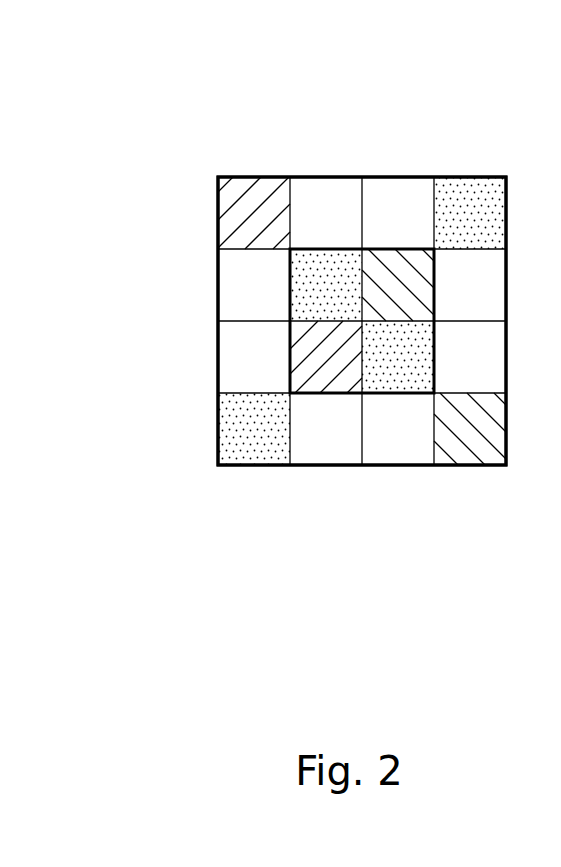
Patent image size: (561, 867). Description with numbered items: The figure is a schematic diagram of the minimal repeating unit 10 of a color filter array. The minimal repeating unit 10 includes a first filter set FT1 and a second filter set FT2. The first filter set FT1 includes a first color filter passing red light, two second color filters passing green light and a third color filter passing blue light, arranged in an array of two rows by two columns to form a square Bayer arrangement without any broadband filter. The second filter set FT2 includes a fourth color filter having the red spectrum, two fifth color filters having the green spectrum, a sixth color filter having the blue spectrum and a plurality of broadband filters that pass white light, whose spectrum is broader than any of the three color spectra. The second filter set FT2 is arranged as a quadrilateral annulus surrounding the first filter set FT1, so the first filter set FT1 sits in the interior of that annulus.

The minimal repeating unit 10 is at (69, 73).
The first filter set FT1 is at (380, 377).
The second filter set FT2 is at (233, 287).